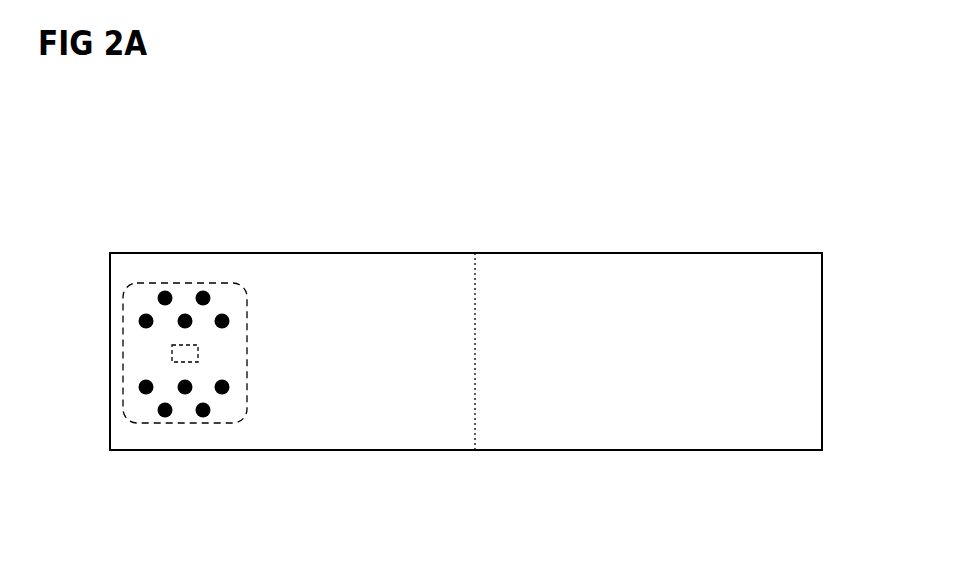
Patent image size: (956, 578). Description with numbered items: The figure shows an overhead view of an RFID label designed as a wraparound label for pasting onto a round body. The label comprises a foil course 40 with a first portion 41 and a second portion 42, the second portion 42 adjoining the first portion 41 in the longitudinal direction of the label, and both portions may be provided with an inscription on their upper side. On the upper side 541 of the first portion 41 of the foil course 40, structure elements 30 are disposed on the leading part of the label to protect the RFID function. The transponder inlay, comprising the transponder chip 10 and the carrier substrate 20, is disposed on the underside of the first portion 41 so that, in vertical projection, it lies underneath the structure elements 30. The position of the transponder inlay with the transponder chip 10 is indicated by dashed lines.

The transponder chip 10 is at (173, 360).
The carrier substrate 20 is at (135, 415).
The structure elements 30 is at (213, 410).
The foil course 40 is at (532, 460).
The first portion 41 is at (375, 277).
The second portion 42 is at (597, 262).
The upper side of the first portion 541 is at (297, 283).